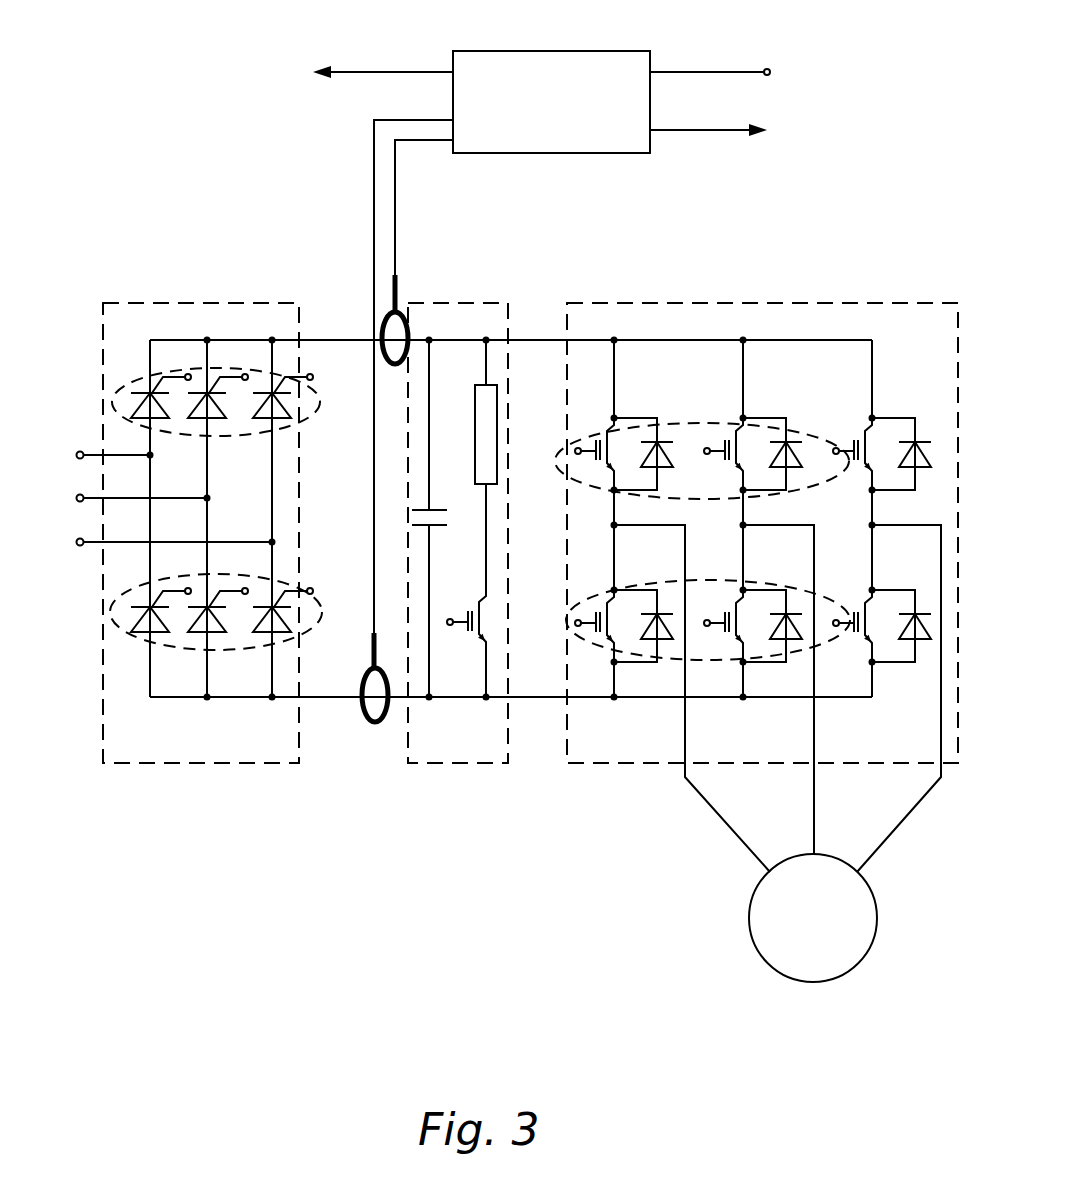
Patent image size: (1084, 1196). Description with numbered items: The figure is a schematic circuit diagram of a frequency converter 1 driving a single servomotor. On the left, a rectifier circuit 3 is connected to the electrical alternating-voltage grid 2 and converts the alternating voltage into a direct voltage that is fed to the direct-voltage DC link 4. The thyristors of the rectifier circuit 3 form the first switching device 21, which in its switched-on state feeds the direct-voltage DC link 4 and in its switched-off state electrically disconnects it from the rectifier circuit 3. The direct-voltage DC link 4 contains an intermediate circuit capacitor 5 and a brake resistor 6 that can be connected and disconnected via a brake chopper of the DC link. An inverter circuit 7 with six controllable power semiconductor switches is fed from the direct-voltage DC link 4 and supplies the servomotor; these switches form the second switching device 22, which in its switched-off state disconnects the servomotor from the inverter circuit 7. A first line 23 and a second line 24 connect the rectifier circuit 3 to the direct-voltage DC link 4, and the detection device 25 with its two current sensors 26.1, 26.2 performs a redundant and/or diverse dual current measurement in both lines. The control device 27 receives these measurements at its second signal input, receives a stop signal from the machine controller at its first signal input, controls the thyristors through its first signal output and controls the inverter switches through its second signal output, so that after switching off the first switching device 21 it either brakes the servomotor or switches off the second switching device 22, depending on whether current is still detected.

The frequency converter 1 is at (211, 236).
The electrical alternating-voltage grid 2 is at (63, 438).
The rectifier circuit 3 is at (235, 583).
The direct-voltage DC link 4 is at (458, 538).
The intermediate circuit capacitor 5 is at (437, 502).
The brake resistor 6 is at (488, 400).
The inverter circuit 7 is at (735, 593).
The first switching device 21 is at (320, 402).
The second switching device 22 is at (565, 635).
The first line 23 is at (303, 336).
The second line 24 is at (305, 700).
The detection device 25 is at (426, 558).
The current sensor 26.1 is at (398, 318).
The current sensor 26.2 is at (378, 722).
The control device 27 is at (637, 58).